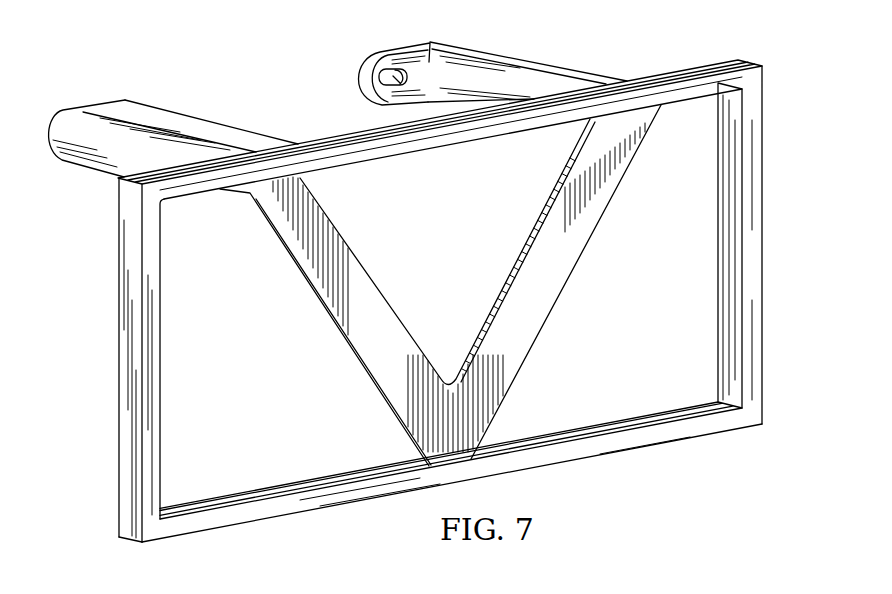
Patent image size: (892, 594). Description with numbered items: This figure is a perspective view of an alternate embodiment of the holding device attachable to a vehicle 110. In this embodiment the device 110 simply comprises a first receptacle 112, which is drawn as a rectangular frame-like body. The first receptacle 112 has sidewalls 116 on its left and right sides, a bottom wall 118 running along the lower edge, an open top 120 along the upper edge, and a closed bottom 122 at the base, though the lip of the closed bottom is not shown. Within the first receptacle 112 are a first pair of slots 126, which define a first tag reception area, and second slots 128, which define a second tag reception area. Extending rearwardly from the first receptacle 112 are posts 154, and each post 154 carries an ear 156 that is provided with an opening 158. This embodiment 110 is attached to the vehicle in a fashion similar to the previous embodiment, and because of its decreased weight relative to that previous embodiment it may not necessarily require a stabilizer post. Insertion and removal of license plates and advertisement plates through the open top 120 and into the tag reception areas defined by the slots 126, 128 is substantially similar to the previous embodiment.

The holding device attachable to a vehicle 110 is at (750, 485).
The first receptacle 112 is at (770, 243).
The sidewalls 116 is at (128, 331).
The bottom wall 118 is at (643, 437).
The open top 120 is at (742, 64).
The closed bottom 122 is at (181, 541).
The first pair of slots 126 is at (735, 382).
The second slots 128 is at (726, 298).
The posts 154 is at (188, 140).
The ear 156 is at (92, 106).
The opening 158 is at (398, 88).